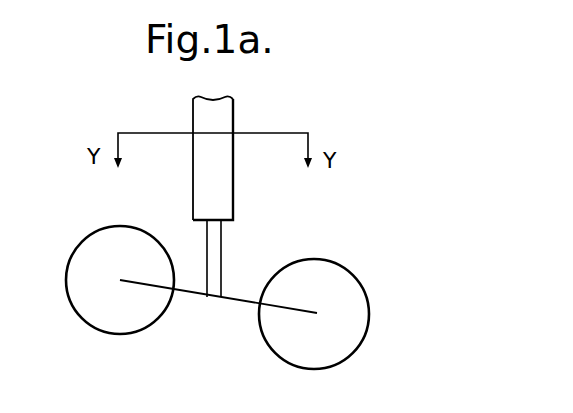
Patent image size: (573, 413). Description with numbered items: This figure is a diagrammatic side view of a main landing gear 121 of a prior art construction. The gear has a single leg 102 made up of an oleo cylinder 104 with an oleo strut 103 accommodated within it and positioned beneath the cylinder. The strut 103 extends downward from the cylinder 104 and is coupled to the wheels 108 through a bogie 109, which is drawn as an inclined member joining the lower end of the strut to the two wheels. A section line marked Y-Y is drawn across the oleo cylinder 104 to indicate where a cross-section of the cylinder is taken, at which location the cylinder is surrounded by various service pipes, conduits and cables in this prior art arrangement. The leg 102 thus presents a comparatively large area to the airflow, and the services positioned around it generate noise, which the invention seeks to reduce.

The main landing gear 121 is at (438, 123).
The leg 102 is at (265, 205).
The oleo cylinder 104 is at (223, 113).
The oleo strut 103 is at (208, 243).
The bogie 109 is at (233, 298).
The wheels 108 is at (363, 307).